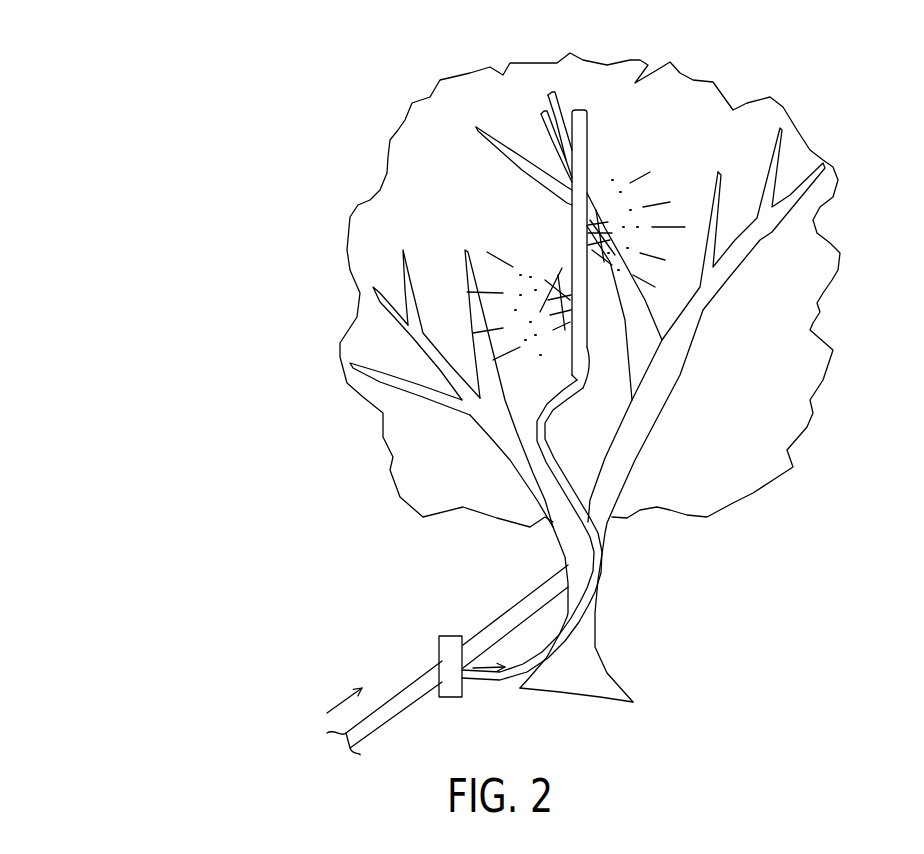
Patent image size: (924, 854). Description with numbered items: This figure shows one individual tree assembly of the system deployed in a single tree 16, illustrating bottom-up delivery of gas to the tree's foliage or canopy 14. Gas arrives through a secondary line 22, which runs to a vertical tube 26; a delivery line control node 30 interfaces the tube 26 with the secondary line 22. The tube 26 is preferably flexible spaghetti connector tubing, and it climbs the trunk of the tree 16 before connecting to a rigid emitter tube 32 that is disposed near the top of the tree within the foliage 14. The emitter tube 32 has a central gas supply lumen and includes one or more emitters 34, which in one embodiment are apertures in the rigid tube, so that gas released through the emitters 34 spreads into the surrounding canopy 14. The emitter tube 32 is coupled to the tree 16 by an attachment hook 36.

The foliage 14 is at (790, 103).
The tree 16 is at (211, 155).
The secondary line 22 is at (403, 700).
The vertical tube 26 is at (603, 582).
The delivery line control node 30 is at (446, 640).
The emitter tube 32 is at (594, 366).
The emitters 34 is at (487, 227).
The attachment hook 36 is at (570, 207).